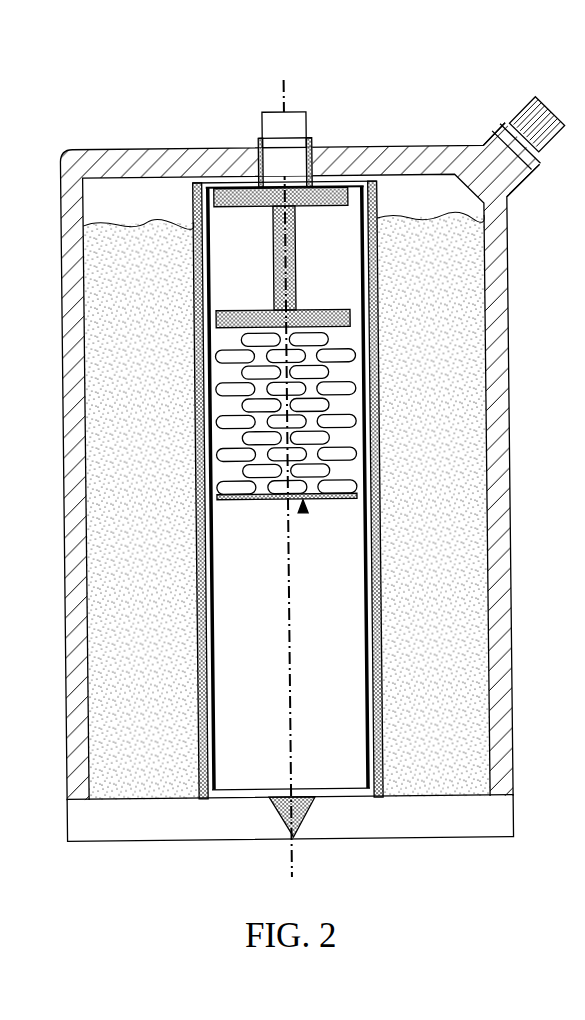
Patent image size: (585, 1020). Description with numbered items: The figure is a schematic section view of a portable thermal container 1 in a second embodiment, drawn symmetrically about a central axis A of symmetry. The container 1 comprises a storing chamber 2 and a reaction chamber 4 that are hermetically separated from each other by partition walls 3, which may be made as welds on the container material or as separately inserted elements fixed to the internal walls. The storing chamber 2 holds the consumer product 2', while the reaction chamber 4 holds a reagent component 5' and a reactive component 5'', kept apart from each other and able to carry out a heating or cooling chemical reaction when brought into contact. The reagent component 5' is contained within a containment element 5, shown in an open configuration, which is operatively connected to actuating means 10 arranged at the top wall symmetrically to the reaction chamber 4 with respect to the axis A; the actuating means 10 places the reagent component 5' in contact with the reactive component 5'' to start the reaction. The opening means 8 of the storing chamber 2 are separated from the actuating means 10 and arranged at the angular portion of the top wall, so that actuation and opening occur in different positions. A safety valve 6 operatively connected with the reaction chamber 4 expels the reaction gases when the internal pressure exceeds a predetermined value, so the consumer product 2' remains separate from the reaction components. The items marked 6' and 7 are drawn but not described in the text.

The portable thermal container 1 is at (149, 150).
The storing chamber 2 is at (284, 461).
The consumer product 2' is at (256, 506).
The partition walls 3 is at (366, 611).
The reaction chamber 4 is at (338, 683).
The containment element 5 is at (385, 256).
The reagent component 5' is at (437, 523).
The reactive component 5'' is at (390, 415).
The safety valve 6 is at (290, 846).
The piston cavity 6' is at (280, 259).
The neck 7 is at (512, 168).
The opening means 8 is at (538, 110).
The actuating means 10 is at (289, 95).
The axis of symmetry A is at (304, 470).